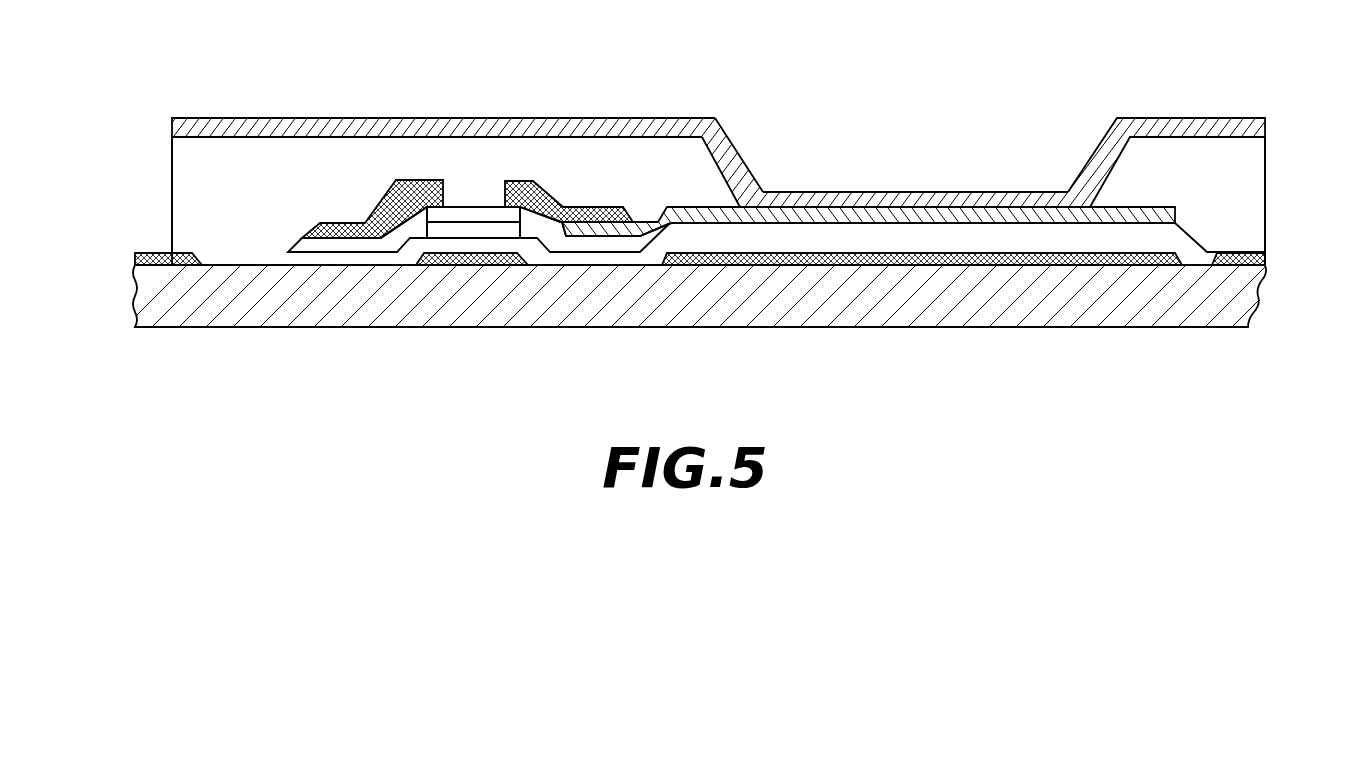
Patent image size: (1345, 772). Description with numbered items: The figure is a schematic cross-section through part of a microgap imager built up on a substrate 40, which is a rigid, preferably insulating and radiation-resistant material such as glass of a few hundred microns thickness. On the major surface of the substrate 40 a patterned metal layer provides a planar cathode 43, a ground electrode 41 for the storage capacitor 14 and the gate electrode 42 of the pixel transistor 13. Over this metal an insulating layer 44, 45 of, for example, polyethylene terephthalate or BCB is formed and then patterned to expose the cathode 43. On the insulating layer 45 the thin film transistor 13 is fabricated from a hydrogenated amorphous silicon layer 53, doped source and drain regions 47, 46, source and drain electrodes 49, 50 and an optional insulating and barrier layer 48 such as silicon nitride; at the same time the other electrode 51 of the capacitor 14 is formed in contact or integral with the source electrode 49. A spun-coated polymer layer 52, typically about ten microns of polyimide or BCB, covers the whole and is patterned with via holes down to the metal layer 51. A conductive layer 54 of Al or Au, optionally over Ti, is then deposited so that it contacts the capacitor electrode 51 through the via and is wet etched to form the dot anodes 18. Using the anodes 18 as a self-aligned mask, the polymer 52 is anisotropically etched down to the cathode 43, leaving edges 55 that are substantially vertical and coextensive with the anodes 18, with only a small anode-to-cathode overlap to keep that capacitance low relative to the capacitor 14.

The pixel transistor 13 is at (356, 217).
The storage capacitor 14 is at (970, 242).
The dot anode 18 is at (727, 135).
The substrate 40 is at (1247, 297).
The ground electrode 41 is at (722, 260).
The gate electrode 42 is at (456, 264).
The planar cathode 43 is at (138, 259).
The insulating layer 44 is at (922, 323).
The insulating layer 45 is at (503, 246).
The drain region 46 is at (293, 238).
The source region 47 is at (569, 143).
The insulating and barrier layer 48 is at (448, 227).
The source electrode 49 is at (590, 203).
The drain electrode 50 is at (372, 206).
The capacitor electrode 51 is at (905, 207).
The polymer insulation layer 52 is at (325, 181).
The hydrogenated amorphous silicon layer 53 is at (433, 233).
The conductive layer 54 is at (673, 117).
The edges of the insulation layer 55 is at (728, 163).